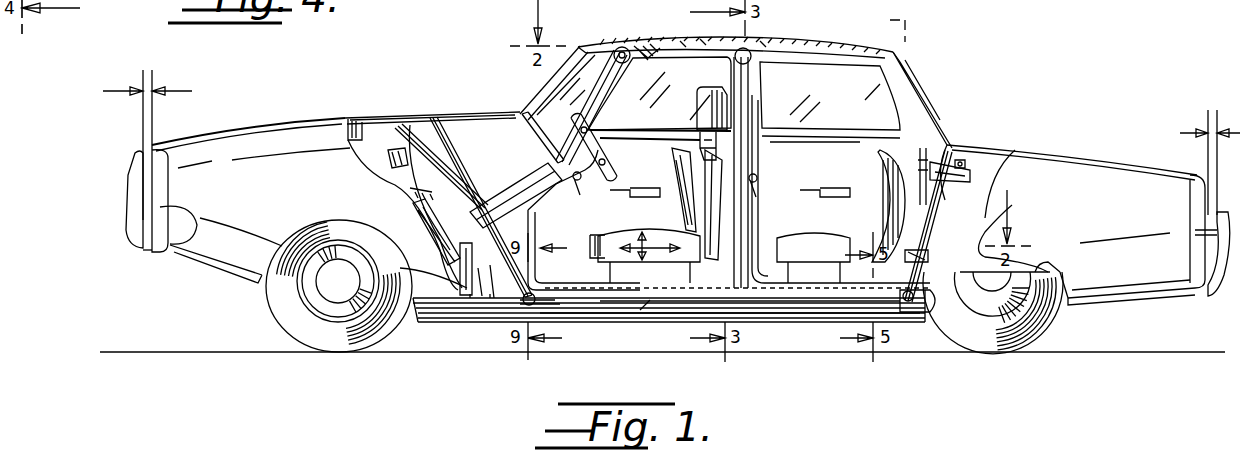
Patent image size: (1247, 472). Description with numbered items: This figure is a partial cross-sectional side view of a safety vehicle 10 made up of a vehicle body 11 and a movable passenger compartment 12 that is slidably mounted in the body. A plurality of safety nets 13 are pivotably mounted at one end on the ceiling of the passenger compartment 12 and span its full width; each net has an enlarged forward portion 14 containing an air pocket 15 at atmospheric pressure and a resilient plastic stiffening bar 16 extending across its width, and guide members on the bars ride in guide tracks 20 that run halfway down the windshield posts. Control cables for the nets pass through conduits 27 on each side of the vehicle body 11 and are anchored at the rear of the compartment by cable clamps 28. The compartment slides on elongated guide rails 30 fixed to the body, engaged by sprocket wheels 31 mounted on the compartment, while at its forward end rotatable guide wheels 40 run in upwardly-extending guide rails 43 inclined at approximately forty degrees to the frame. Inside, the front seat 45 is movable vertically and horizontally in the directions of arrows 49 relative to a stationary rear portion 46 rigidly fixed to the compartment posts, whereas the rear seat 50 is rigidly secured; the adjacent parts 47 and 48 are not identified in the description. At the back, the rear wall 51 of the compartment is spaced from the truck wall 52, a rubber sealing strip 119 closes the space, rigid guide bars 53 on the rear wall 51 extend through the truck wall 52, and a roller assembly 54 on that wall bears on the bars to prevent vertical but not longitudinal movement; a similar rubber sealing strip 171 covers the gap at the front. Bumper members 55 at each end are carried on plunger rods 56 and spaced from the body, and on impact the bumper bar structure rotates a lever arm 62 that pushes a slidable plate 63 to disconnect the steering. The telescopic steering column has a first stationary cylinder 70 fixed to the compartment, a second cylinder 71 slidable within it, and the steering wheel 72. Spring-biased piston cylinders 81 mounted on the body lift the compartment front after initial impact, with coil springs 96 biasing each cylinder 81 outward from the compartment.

The safety vehicle 10 is at (233, 121).
The vehicle body 11 is at (262, 148).
The movable passenger compartment 12 is at (462, 118).
The safety nets 13 is at (705, 41).
The enlarged forward portions 14 is at (655, 44).
The air pocket 15 is at (612, 47).
The resilient plastic stiffening bars 16 is at (626, 46).
The guide tracks 20 is at (605, 106).
The conduits 27 is at (665, 310).
The cable clamps 28 is at (920, 256).
The guide rails 30 is at (585, 313).
The sprocket wheels 31 is at (905, 300).
The rotatable guide wheels 40 is at (518, 306).
The upwardly-extending guide rails 43 is at (422, 130).
The front seat 45 is at (590, 232).
The stationary rear portion 46 is at (718, 222).
The front seat back 47 is at (700, 92).
The seat back latch 48 is at (718, 140).
The arrows 49 is at (630, 232).
The rear seat 50 is at (885, 192).
The rear wall 51 is at (936, 165).
The truck wall 52 is at (950, 205).
The rigid guide bars 53 is at (975, 162).
The roller assembly 54 is at (1010, 153).
The bumper members 55 is at (120, 225).
The plunger rods 56 is at (155, 262).
The lever arm 62 is at (445, 268).
The slidable plate 63 is at (416, 216).
The first stationary cylinder 70 is at (507, 192).
The second cylinder 71 is at (546, 157).
The steering wheel 72 is at (610, 164).
The cylinder 81 is at (392, 158).
The coil springs 96 is at (420, 195).
The rubber sealing strip 119 is at (962, 140).
The rubber sealing strip 171 is at (372, 125).